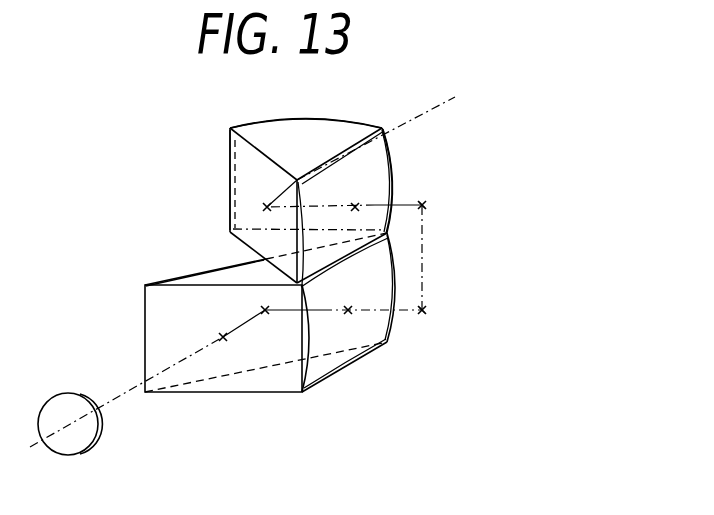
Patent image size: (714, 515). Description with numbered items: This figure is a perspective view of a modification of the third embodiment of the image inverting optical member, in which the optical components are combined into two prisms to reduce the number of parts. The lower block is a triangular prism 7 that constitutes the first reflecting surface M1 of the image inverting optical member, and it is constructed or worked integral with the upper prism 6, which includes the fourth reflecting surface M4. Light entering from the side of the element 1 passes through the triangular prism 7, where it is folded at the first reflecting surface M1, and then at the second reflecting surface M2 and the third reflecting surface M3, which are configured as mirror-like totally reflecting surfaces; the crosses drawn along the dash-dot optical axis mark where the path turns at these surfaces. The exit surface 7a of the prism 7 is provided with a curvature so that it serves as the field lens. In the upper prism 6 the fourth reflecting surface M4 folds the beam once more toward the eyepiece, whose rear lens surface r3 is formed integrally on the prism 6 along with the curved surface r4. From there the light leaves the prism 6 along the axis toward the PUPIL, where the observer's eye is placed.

The lens / eye pupil object 1 is at (100, 428).
The prism 6 is at (352, 131).
The triangular prism 7 is at (262, 380).
The exit surface 7a is at (340, 380).
The first reflecting surface M1 is at (182, 276).
The second reflecting surface M2 is at (437, 310).
The third reflecting surface M3 is at (432, 205).
The fourth reflecting surface M4 is at (230, 198).
The third lens surface r3 is at (393, 167).
The radius of curvature of surface 4 r4 is at (333, 120).
The exit pupil PUPIL is at (458, 95).